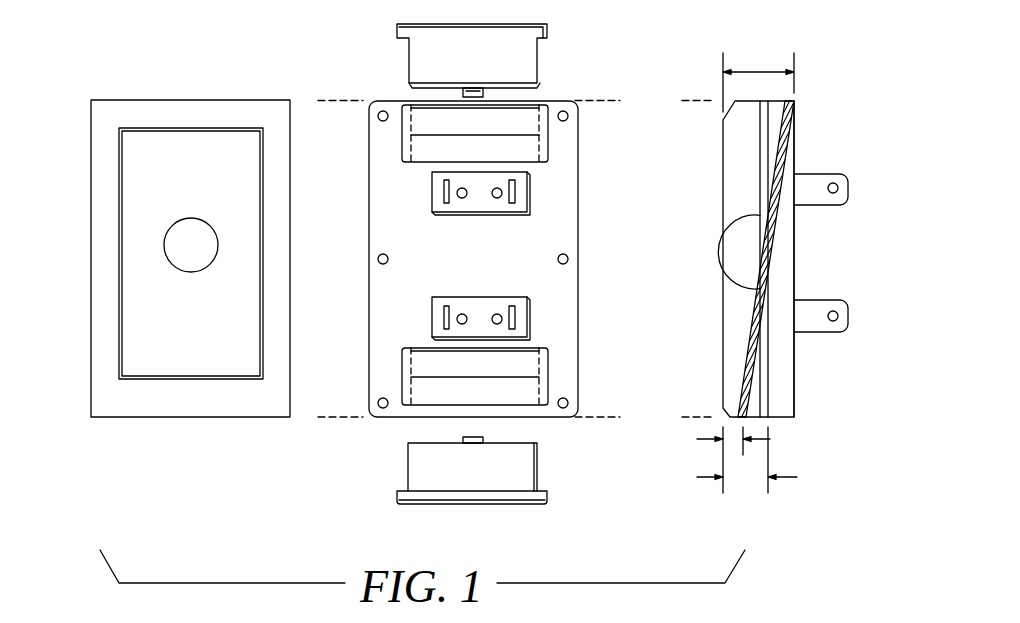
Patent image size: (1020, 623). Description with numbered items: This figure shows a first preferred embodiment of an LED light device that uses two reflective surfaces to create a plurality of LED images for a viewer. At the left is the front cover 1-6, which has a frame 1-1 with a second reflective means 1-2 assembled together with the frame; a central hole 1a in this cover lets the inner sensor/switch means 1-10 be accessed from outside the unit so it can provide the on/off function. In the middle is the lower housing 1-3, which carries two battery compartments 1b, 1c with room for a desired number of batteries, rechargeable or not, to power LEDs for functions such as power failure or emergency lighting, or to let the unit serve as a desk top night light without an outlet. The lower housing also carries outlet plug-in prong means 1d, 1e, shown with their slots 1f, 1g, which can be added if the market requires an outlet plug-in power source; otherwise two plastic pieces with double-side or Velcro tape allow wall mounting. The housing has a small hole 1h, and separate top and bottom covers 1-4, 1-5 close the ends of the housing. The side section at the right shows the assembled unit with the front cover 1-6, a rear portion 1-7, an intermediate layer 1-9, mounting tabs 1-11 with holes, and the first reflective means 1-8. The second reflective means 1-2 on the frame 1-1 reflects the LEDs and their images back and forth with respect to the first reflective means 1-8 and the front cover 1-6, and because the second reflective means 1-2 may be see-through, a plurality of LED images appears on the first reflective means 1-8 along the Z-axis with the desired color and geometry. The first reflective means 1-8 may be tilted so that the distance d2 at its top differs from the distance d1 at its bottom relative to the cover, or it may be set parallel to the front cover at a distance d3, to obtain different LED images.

The frame 1-1 is at (103, 172).
The second reflective means 1-2 is at (143, 331).
The opening 1a is at (178, 245).
The lower housing 1-3 is at (557, 279).
The top cover 1-4 is at (417, 53).
The bottom cover 1-5 is at (423, 465).
The battery compartment 1b is at (420, 128).
The battery compartment 1c is at (547, 376).
The outlet plug-in prong means 1d is at (430, 195).
The outlet plug-in prong means 1e is at (427, 326).
The upper connector slot 1f is at (445, 192).
The lower connector slot 1g is at (445, 318).
The mounting hole 1h is at (378, 259).
The front cover 1-6 is at (740, 137).
The back plate 1-7 is at (825, 259).
The first reflective means 1-8 is at (740, 370).
The intermediate plate 1-9 is at (768, 357).
The sensor/switch means 1-10 is at (732, 252).
The mounting tab 1-11 is at (820, 303).
The distance of the bottom of the first reflective means with respect to the cover d1 is at (719, 460).
The distance of the top of the first reflective means with respect to the cover d2 is at (758, 71).
The distance d3 is at (747, 460).